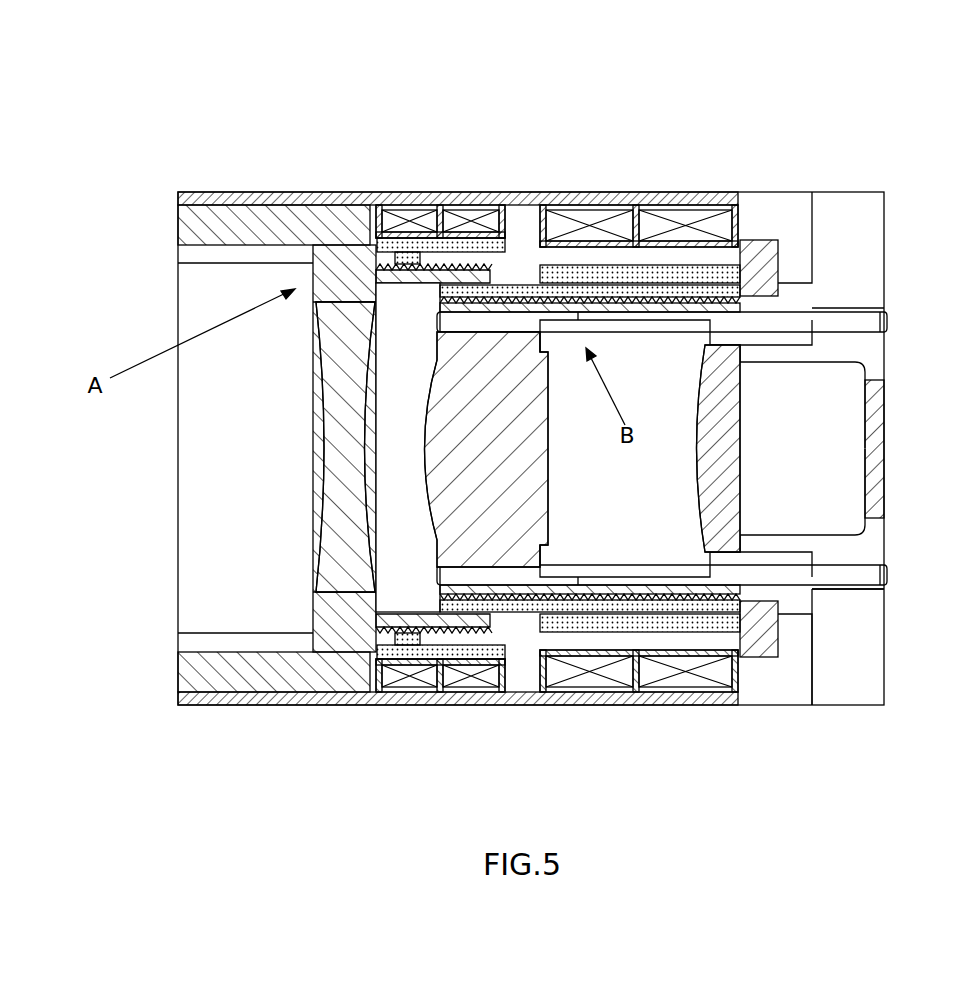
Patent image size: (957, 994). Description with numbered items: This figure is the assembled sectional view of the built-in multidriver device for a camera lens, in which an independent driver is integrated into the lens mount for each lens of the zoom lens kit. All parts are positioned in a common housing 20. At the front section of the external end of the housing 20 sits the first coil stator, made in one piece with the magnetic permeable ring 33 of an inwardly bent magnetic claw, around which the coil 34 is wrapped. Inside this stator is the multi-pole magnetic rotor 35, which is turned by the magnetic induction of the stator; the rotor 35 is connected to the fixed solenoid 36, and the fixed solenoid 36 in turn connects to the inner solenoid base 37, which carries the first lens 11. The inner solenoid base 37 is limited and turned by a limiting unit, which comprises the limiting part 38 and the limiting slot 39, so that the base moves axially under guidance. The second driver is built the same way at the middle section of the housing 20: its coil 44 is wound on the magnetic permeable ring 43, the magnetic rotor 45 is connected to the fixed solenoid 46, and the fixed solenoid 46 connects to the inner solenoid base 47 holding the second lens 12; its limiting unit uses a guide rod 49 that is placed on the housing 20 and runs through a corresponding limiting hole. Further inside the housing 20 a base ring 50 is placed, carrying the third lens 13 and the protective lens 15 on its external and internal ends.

The first lens 11 is at (345, 585).
The second lens 12 is at (502, 555).
The third lens 13 is at (712, 585).
The protective lens 15 is at (870, 525).
The housing 20 is at (240, 192).
The magnetic permeable ring 33 is at (505, 300).
The coil 34 is at (478, 240).
The magnetic rotor 35 is at (420, 275).
The fixed solenoid 36 is at (378, 272).
The inner solenoid base 37 is at (445, 222).
The limiting part 38 is at (330, 258).
The limiting slot 39 is at (212, 252).
The magnetic permeable ring 43 is at (546, 300).
The coil 44 is at (620, 228).
The magnetic rotor 45 is at (765, 270).
The fixed solenoid 46 is at (796, 192).
The inner solenoid base 47 is at (530, 290).
The guide rod 49 is at (655, 275).
The base ring 50 is at (836, 690).